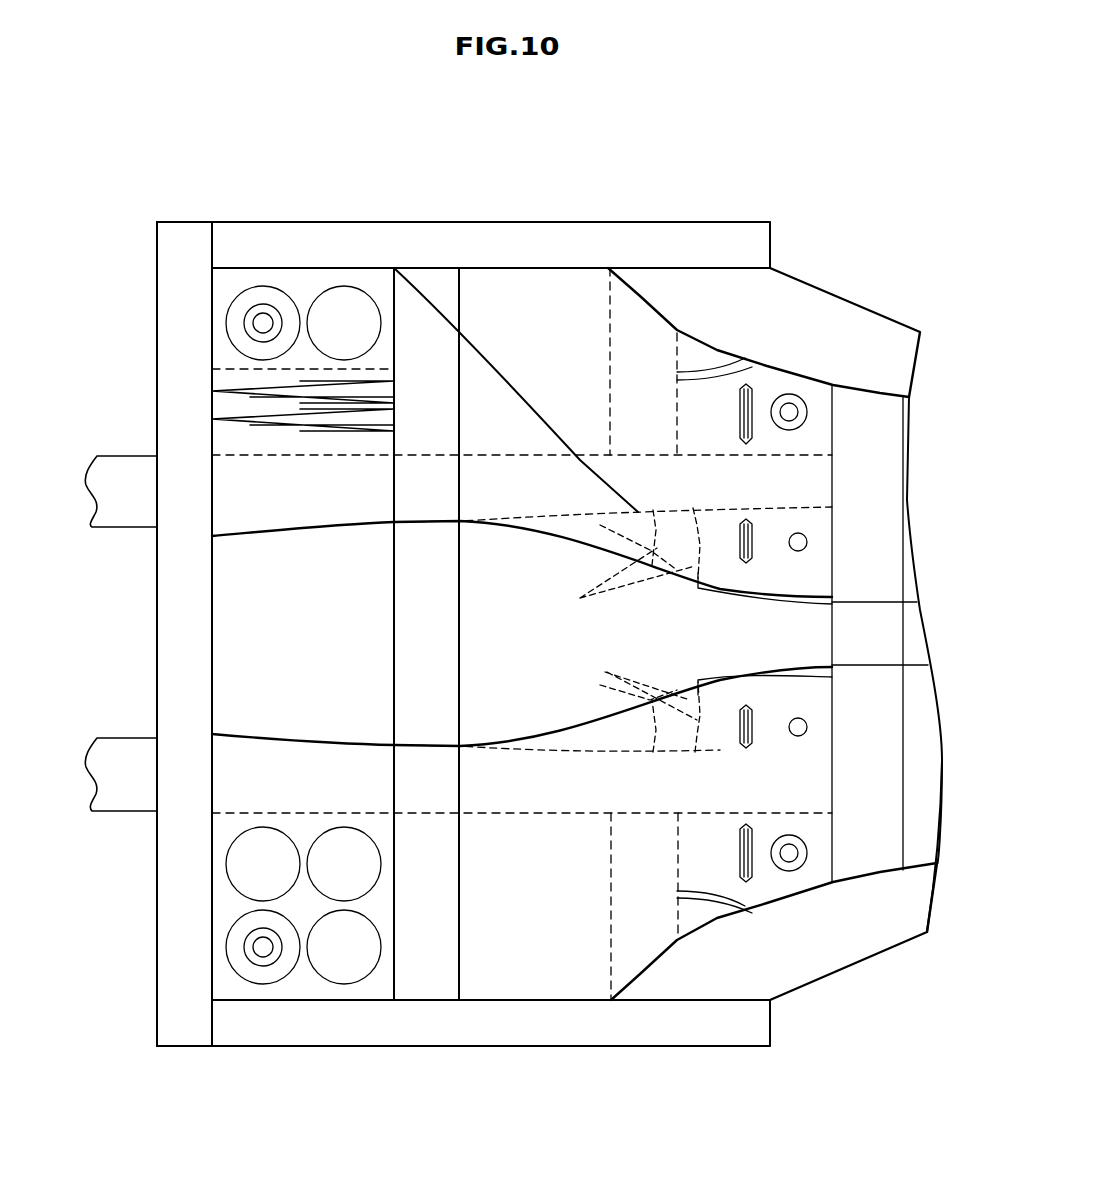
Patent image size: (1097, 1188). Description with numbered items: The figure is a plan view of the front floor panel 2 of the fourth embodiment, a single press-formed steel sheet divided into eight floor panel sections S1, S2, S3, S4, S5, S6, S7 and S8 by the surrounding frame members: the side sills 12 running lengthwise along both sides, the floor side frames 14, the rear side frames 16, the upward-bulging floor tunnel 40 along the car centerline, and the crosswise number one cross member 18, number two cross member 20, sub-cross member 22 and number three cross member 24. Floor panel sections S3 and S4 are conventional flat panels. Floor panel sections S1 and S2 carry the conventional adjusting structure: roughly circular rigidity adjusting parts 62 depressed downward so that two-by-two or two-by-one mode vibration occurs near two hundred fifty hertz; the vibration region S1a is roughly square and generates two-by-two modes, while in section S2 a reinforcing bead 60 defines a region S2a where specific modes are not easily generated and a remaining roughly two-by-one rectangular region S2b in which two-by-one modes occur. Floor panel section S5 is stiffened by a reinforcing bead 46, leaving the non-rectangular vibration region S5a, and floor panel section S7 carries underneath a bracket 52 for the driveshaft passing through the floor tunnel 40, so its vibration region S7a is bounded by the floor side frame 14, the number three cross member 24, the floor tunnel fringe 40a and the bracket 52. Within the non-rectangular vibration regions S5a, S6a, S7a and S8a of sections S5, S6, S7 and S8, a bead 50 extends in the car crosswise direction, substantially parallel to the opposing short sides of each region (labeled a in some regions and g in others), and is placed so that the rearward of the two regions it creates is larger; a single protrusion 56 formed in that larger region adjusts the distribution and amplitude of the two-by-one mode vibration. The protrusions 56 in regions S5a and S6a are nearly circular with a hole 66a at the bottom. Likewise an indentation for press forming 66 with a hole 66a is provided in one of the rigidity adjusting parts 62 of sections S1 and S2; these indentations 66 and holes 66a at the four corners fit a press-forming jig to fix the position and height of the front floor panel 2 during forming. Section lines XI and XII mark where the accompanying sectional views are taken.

The front floor panel 2 is at (488, 293).
The side sill 12 is at (263, 222).
The floor side frame 14 is at (603, 455).
The rear side frame 16 is at (787, 283).
The No. 1 cross member 18 is at (173, 230).
The No. 2 cross member 20 is at (392, 287).
The sub-cross member 22 is at (610, 310).
The No. 3 cross member 24 is at (907, 510).
The floor tunnel 40 is at (247, 567).
The floor tunnel fringe 40a is at (720, 677).
The reinforcing bead 46 is at (712, 365).
The bead 50 is at (746, 386).
The bracket 52 is at (600, 525).
The protrusion 56 is at (808, 408).
The reinforcing bead 60 is at (217, 420).
The rigidity adjusting part 62 is at (310, 350).
The indentation for press forming 66 is at (253, 305).
The hole 66a is at (262, 307).
The floor panel section S1 is at (275, 988).
The vibration region S1a is at (233, 988).
The floor panel section S2 is at (227, 322).
The region S2a is at (247, 430).
The remaining region S2b is at (230, 287).
The floor panel section S3 is at (507, 930).
The floor panel section S4 is at (570, 293).
The floor panel section S5 is at (717, 907).
The vibration region S5a is at (840, 875).
The floor panel section S6 is at (717, 357).
The vibration region S6a is at (695, 400).
The floor panel section S7 is at (620, 737).
The vibration region S7a is at (765, 715).
The floor panel section S8 is at (440, 300).
The vibration region S8a is at (757, 572).
The short side a is at (677, 400).
The short side g is at (590, 592).
The section line XI is at (605, 853).
The section line XII is at (610, 727).